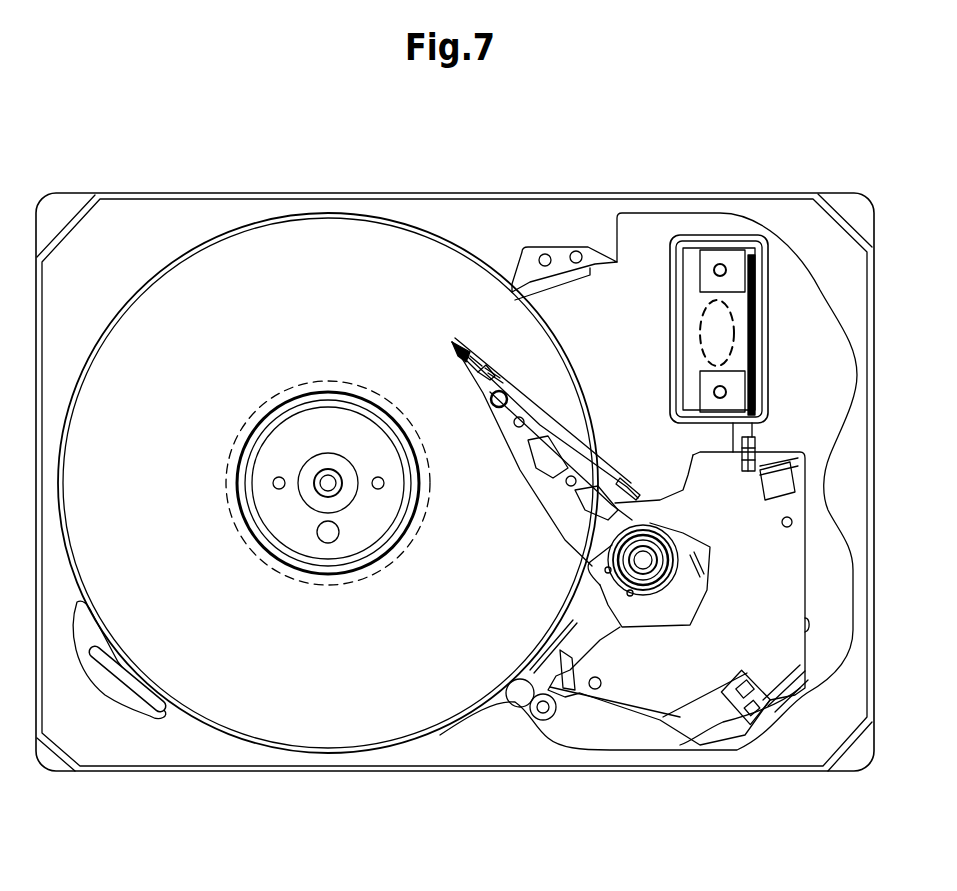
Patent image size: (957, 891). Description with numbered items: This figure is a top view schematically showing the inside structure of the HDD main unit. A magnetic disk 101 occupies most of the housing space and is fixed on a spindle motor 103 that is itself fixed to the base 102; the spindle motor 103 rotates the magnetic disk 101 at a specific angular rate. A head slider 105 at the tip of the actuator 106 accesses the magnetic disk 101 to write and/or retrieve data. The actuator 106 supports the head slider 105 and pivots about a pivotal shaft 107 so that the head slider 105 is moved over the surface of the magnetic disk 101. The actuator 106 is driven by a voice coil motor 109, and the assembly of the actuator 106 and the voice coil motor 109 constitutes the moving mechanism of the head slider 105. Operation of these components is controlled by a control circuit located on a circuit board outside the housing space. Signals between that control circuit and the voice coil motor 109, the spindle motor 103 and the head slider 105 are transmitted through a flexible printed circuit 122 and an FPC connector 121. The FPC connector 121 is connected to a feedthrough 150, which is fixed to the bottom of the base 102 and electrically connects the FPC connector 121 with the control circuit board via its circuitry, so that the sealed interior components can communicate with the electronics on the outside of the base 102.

The magnetic disk 101 is at (566, 350).
The base 102 is at (388, 771).
The spindle motor 103 is at (305, 582).
The head slider 105 is at (458, 353).
The actuator 106 is at (510, 452).
The pivotal shaft 107 is at (580, 568).
The voice coil motor 109 is at (585, 718).
The FPC connector 121 is at (770, 378).
The flexible printed circuit 122 is at (685, 492).
The feedthrough 150 is at (692, 323).